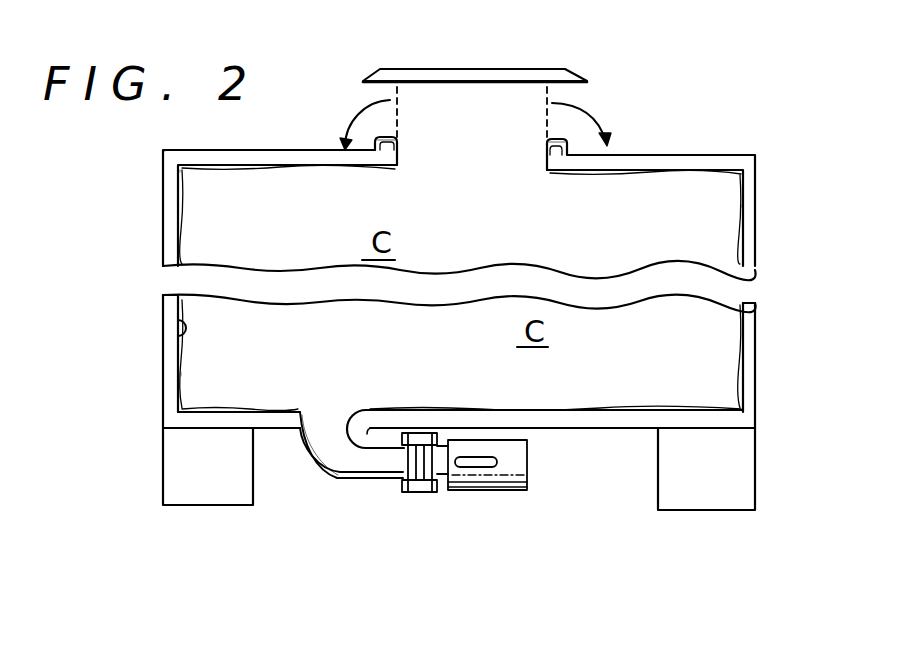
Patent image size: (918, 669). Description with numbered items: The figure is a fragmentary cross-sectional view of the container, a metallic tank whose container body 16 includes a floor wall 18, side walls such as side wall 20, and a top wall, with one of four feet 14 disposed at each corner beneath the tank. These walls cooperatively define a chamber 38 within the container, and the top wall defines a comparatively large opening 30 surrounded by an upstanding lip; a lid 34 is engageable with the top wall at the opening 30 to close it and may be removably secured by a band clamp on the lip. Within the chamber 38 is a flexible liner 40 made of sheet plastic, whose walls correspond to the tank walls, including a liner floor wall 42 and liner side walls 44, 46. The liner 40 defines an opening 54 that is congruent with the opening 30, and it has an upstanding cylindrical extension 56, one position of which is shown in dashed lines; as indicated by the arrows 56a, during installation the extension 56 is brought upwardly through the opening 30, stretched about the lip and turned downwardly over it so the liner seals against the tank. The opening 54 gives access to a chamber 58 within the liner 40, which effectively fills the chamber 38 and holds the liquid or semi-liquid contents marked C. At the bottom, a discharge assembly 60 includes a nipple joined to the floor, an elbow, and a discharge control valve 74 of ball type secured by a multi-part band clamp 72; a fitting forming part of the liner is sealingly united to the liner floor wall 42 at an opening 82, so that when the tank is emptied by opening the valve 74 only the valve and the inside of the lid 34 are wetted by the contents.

The feet 14 is at (190, 460).
The container body 16 is at (755, 220).
The floor wall 18 is at (573, 430).
The side wall 20 is at (163, 215).
The opening 30 is at (400, 150).
The lid 34 is at (567, 72).
The chamber 38 is at (186, 337).
The flexible liner 40 is at (181, 203).
The floor wall of liner 42 is at (493, 408).
The liner wall 44 is at (183, 376).
The liner wall 46 is at (741, 205).
The opening of liner 54 is at (545, 152).
The upstanding cylindrical extension 56 is at (546, 108).
The arrows 56a is at (388, 100).
The chamber within liner 58 is at (493, 251).
The bottom discharge assembly 60 is at (343, 490).
The multi-part band clamp 72 is at (420, 492).
The discharge control valve 74 is at (462, 489).
The opening in liner floor 82 is at (310, 420).